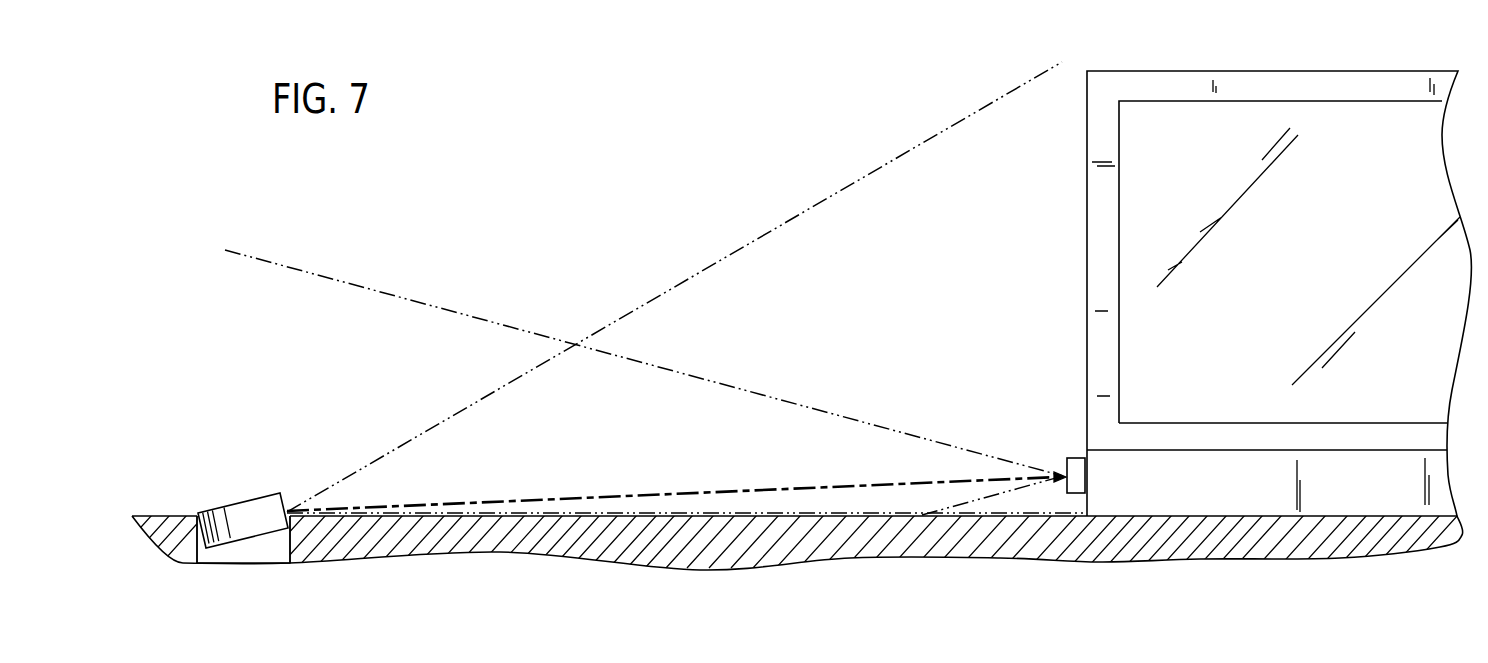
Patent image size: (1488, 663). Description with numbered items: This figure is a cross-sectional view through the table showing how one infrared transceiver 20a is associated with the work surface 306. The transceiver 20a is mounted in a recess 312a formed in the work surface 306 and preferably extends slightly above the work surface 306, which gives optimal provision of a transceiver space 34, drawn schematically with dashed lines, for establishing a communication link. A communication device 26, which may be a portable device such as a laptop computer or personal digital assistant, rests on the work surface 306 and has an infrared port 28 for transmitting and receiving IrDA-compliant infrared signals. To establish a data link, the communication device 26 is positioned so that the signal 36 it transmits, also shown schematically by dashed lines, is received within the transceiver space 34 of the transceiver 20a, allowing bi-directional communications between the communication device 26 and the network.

The communication device 26 is at (1155, 71).
The infrared port 28 is at (1073, 458).
The transceiver space 34 is at (815, 205).
The signal 36 is at (793, 402).
The transceiver 20a is at (241, 502).
The work surface 306 is at (168, 515).
The recess 312a is at (277, 556).